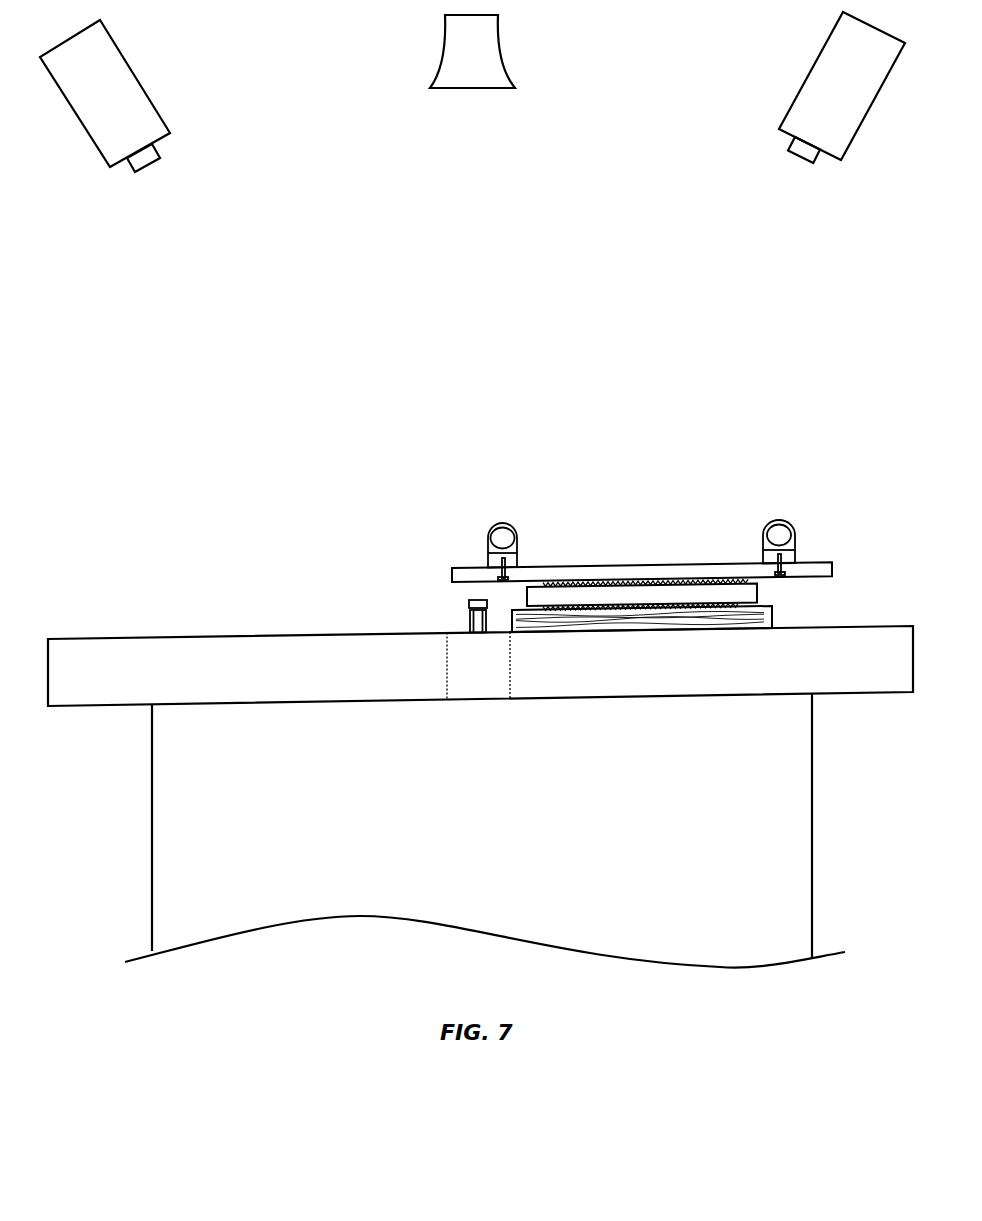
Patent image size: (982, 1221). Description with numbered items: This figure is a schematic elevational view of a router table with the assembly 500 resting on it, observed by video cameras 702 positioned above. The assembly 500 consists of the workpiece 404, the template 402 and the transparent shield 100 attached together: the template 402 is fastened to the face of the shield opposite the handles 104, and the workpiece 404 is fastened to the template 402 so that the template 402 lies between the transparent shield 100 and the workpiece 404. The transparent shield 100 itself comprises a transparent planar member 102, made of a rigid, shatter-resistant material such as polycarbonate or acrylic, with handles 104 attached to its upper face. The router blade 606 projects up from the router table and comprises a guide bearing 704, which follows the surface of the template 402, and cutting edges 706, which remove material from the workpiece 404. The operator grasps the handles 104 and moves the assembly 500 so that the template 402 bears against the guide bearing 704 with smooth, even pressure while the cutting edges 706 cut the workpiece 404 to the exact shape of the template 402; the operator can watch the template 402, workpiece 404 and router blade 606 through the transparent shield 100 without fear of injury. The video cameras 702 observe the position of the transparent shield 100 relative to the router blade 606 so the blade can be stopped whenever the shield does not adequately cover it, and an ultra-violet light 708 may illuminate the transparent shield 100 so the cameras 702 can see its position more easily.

The transparent shield 100 is at (441, 575).
The transparent planar member 102 is at (832, 563).
The handles 104 is at (517, 535).
The template 402 is at (757, 596).
The workpiece 404 is at (772, 618).
The assembly 500 is at (696, 461).
The router blade 606 is at (501, 627).
The video camera 702 is at (125, 107).
The guide bearing 704 is at (469, 603).
The cutting edges 706 is at (470, 625).
The light source 708 is at (492, 72).